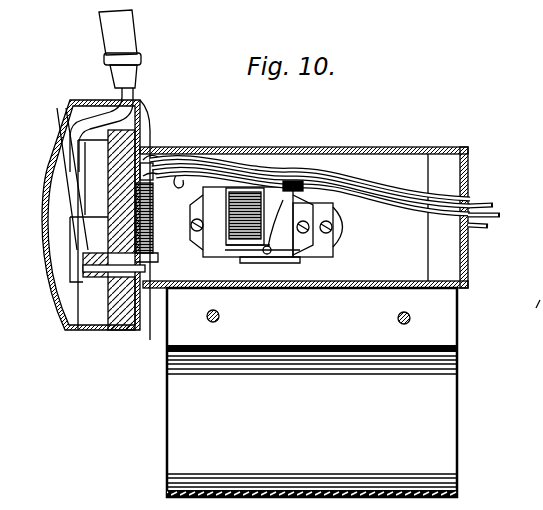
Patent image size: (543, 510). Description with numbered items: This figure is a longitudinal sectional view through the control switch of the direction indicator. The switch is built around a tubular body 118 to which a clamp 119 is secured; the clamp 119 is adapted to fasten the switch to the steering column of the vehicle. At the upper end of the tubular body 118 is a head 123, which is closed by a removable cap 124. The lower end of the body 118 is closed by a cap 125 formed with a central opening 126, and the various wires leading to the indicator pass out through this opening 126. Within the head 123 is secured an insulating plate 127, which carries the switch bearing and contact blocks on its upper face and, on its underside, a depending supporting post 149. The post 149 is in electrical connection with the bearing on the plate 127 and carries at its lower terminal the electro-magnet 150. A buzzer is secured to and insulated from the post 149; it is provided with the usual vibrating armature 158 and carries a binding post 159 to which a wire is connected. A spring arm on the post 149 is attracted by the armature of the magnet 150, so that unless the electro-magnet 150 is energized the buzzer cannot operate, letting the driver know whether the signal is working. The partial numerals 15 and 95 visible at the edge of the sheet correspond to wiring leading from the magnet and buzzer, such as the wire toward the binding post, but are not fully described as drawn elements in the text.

The insulating plate 127 is at (150, 137).
The binding post 159 is at (293, 182).
The tubular body 118 is at (402, 148).
The cap 125 is at (468, 153).
The central opening 126 is at (480, 203).
The electro-magnet 150 is at (345, 233).
The supporting post 149 is at (236, 225).
The vibrating armature 158 is at (223, 263).
The clamp 119 is at (440, 327).
The removable cap 124 is at (52, 323).
The head 123 is at (120, 333).
The element 15 is at (532, 283).
The element 95 is at (526, 375).